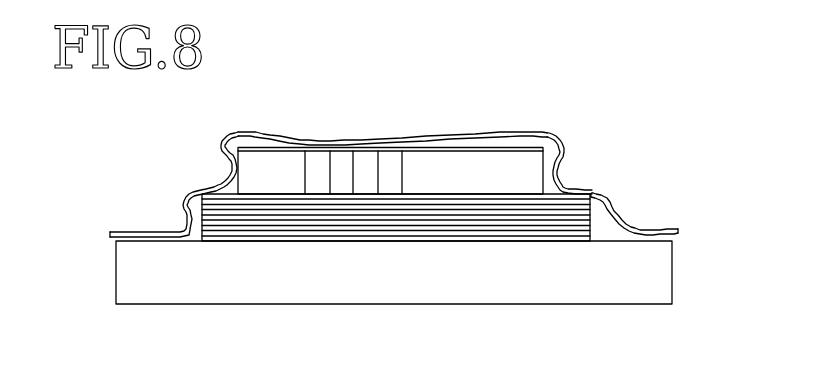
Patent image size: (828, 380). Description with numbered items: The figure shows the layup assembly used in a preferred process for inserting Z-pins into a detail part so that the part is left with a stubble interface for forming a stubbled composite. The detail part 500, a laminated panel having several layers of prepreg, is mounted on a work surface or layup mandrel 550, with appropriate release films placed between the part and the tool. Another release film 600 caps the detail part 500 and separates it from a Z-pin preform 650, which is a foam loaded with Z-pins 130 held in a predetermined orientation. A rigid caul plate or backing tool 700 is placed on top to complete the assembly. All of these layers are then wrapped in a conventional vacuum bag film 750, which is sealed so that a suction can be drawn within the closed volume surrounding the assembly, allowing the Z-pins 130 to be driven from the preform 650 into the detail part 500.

The Z-pins 130 is at (332, 168).
The detail part 500 is at (604, 195).
The layup mandrel 550 is at (555, 285).
The release film 600 is at (463, 195).
The Z-pin preform 650 is at (231, 151).
The backing tool 700 is at (264, 140).
The vacuum bag film 750 is at (558, 133).